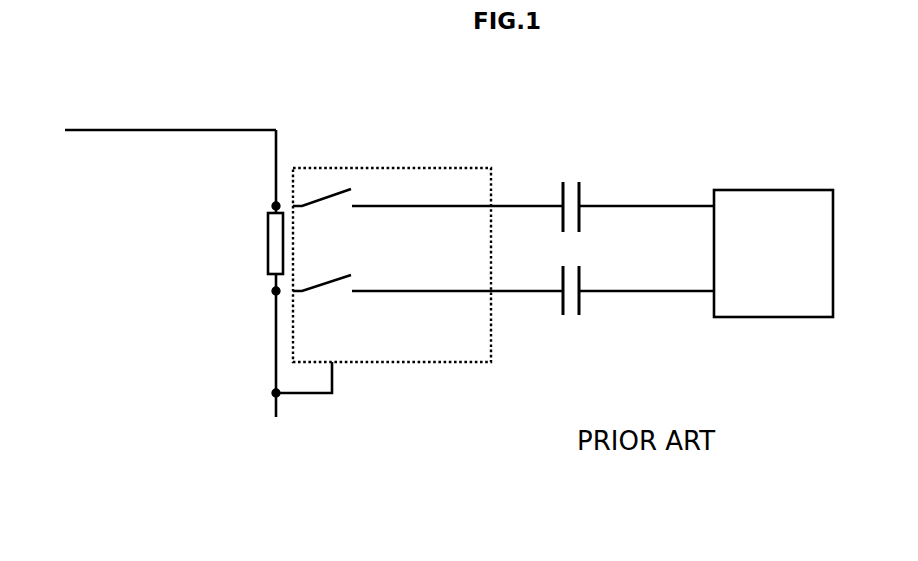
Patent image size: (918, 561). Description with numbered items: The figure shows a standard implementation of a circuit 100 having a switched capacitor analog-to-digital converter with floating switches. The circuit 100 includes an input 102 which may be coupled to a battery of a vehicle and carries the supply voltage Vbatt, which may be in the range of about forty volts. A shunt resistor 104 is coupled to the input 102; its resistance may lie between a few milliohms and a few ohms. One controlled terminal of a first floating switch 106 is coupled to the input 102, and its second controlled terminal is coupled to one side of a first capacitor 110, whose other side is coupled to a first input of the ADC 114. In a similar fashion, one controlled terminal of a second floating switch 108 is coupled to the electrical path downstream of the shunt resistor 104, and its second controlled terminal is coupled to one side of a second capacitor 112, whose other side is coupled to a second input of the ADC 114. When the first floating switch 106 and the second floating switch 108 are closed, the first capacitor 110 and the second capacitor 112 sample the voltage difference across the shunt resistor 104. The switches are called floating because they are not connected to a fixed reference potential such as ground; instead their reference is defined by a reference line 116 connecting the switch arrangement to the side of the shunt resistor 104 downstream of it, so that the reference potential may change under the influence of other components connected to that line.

The circuit 100 is at (704, 68).
The input 102 is at (70, 125).
The shunt resistor 104 is at (262, 222).
The first floating switch 106 is at (343, 203).
The second floating switch 108 is at (333, 295).
The first capacitor 110 is at (570, 178).
The second capacitor 112 is at (573, 320).
The ADC 114 is at (742, 323).
The reference line 116 is at (332, 396).